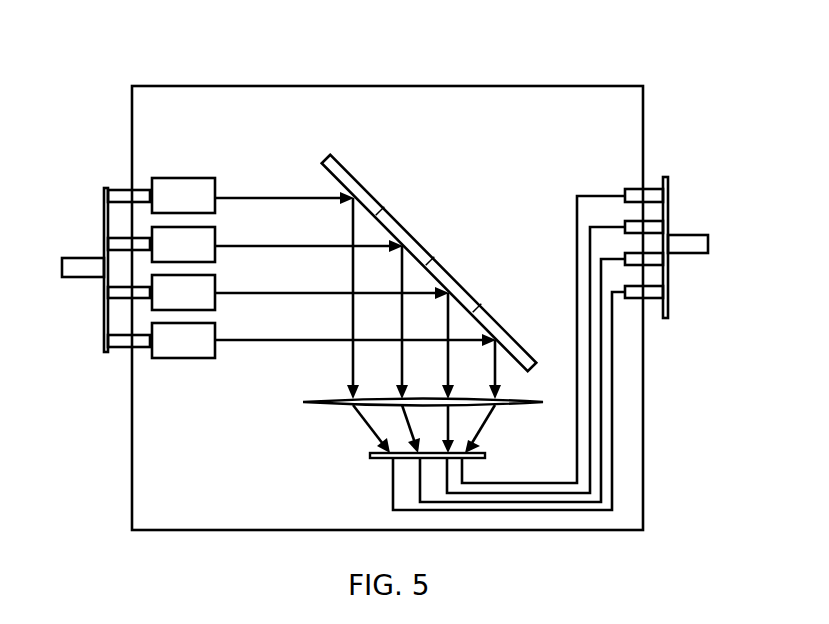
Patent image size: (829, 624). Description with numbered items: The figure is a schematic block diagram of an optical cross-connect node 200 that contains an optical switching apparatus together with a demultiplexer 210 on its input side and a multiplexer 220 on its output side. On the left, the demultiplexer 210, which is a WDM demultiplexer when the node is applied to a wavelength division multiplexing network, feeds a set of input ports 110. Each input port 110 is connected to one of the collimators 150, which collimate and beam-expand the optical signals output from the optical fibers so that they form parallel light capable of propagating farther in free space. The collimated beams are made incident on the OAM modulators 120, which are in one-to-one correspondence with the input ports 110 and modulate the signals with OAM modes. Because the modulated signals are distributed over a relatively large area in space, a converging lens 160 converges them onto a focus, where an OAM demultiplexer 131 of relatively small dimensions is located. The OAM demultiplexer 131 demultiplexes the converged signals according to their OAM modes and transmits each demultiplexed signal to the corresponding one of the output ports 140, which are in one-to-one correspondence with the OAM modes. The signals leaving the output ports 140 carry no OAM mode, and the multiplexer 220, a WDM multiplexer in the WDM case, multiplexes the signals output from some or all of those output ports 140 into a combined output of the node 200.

The optical cross-connect node 200 is at (118, 40).
The input ports 110 is at (114, 235).
The collimators 150 is at (142, 220).
The demultiplexer 210 is at (71, 282).
The OAM modulators 120 is at (399, 238).
The converging lens 160 is at (409, 429).
The OAM demultiplexer 131 is at (401, 483).
The output ports 140 is at (674, 198).
The multiplexer 220 is at (704, 263).